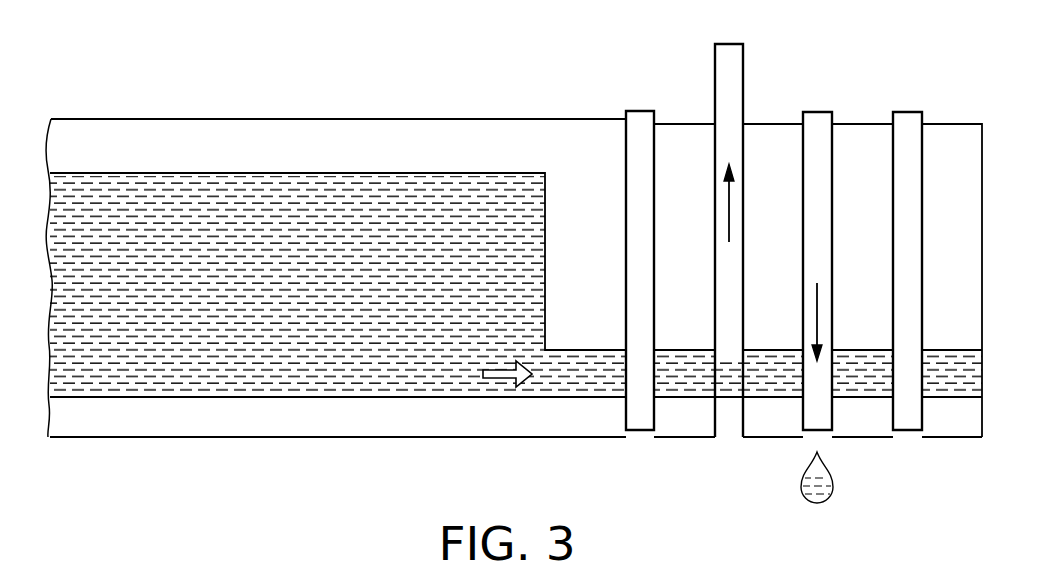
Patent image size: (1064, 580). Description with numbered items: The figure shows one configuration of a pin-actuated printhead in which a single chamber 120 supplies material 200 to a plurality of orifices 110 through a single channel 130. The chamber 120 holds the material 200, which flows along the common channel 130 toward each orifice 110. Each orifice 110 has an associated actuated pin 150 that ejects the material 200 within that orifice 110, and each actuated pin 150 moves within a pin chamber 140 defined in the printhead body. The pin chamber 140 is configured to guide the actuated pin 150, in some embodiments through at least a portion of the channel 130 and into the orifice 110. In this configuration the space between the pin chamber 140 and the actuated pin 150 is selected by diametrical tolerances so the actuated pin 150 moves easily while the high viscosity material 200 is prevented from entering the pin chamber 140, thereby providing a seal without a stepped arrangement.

The orifice 110 is at (638, 441).
The chamber 120 is at (90, 188).
The channel 130 is at (947, 369).
The pin chamber 140 is at (656, 122).
The actuated pin 150 is at (641, 110).
The material 200 is at (314, 297).